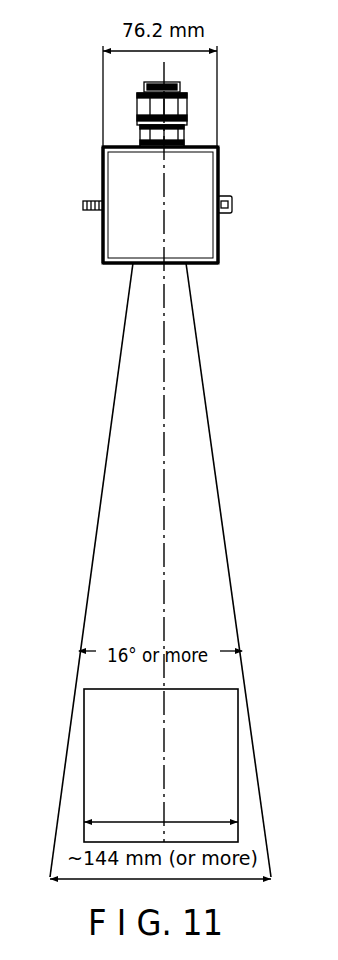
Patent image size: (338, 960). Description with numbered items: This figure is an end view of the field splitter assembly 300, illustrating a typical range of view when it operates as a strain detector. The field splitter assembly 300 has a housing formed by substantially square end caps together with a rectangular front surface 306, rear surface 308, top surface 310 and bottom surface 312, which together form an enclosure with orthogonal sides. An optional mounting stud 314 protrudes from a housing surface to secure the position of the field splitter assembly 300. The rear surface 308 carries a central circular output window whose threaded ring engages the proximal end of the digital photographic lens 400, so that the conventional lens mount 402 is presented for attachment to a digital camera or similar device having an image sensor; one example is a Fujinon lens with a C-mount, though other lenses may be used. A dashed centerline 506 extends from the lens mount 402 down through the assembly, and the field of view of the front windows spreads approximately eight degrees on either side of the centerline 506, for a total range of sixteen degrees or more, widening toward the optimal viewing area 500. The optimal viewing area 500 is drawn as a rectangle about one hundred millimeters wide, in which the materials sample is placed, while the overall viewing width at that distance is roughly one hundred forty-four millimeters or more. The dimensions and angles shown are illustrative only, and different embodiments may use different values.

The field splitter assembly 300 is at (225, 179).
The front surface 306 is at (112, 264).
The rear surface 308 is at (195, 147).
The top surface 310 is at (103, 247).
The bottom surface 312 is at (219, 243).
The mounting stud 314 is at (83, 204).
The digital photographic lens 400 is at (184, 97).
The lens mount 402 is at (145, 88).
The optimal viewing area 500 is at (84, 733).
The centerline 506 is at (162, 573).